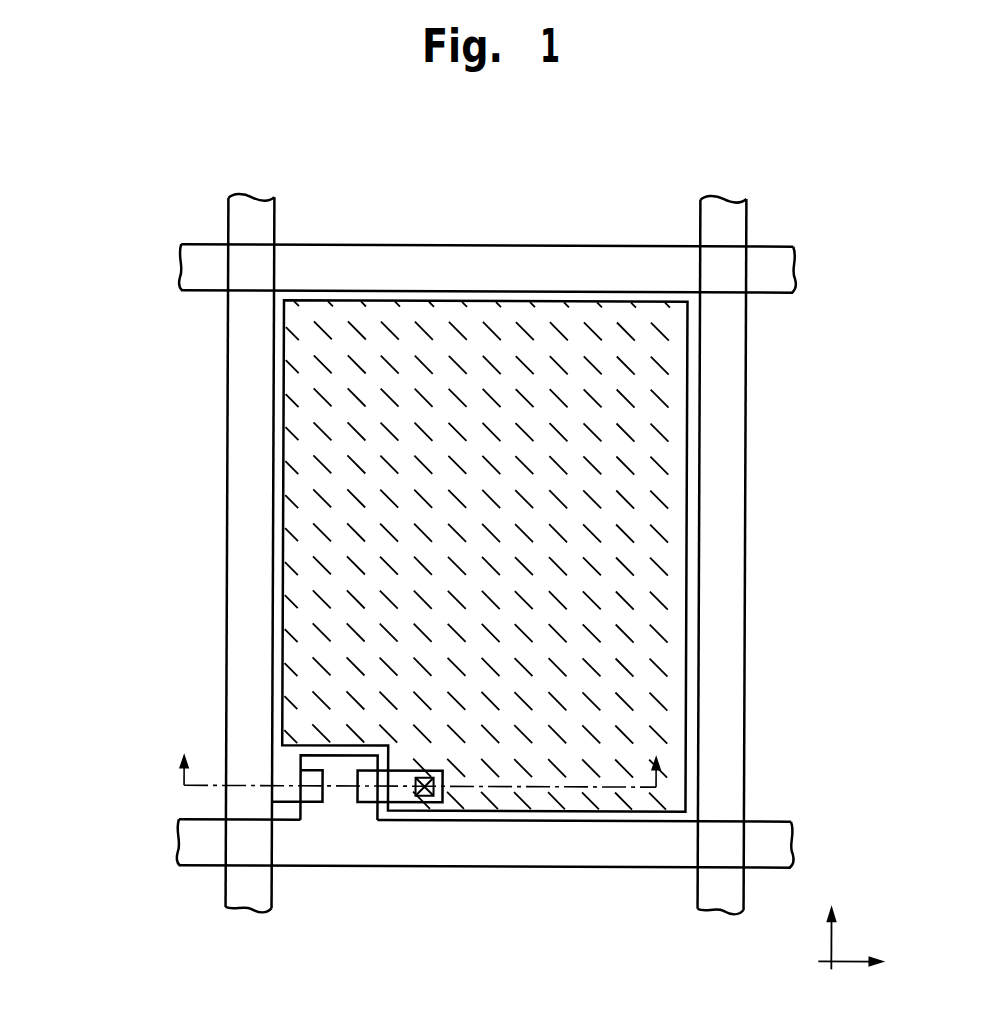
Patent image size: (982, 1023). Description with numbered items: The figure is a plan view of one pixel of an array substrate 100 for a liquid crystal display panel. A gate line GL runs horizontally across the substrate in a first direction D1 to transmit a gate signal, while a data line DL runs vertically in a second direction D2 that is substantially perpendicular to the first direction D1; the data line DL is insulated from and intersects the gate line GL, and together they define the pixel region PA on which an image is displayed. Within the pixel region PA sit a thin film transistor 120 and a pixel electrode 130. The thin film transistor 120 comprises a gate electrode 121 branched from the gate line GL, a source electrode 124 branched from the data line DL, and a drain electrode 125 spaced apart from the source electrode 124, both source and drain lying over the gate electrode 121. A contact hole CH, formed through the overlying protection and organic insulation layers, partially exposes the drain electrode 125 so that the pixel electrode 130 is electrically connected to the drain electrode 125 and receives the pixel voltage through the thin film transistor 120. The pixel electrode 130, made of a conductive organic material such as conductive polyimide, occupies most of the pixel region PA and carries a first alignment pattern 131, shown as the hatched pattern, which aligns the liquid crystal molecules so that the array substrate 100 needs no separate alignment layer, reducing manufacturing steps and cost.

The array substrate 100 is at (730, 137).
The thin film transistor 120 is at (357, 846).
The gate electrode 121 is at (335, 798).
The source electrode 124 is at (282, 797).
The drain electrode 125 is at (398, 797).
The pixel electrode 130 is at (528, 813).
The first alignment pattern 131 is at (643, 505).
The contact hole CH is at (423, 777).
The pixel region PA is at (642, 397).
The gate line GL is at (185, 839).
The data line DL is at (245, 903).
The first direction D1 is at (814, 940).
The second direction D2 is at (850, 976).